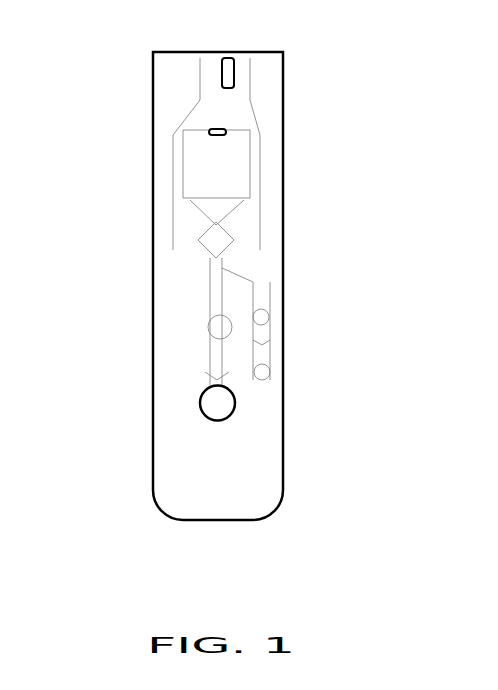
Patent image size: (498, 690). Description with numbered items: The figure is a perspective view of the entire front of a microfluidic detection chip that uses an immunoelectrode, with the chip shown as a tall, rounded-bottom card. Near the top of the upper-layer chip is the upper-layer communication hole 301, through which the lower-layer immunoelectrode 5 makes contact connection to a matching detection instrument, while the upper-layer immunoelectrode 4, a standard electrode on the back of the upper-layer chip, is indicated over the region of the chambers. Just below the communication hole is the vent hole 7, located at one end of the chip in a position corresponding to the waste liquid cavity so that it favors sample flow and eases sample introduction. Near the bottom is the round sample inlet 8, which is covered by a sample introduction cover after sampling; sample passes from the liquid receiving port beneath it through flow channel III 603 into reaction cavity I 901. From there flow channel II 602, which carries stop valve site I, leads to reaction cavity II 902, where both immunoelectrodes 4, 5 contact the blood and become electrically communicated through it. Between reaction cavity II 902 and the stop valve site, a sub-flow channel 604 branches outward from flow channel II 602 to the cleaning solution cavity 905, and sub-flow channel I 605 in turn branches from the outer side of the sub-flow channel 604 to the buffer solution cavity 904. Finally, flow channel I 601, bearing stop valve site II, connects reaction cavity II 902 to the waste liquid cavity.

The upper-layer immunoelectrode 4 is at (198, 102).
The upper-layer communication hole 301 is at (232, 72).
The vent hole 7 is at (226, 131).
The lower-layer immunoelectrode 5 is at (262, 162).
The flow channel I 601 is at (216, 215).
The reaction cavity II 902 is at (215, 265).
The flow channel II 602 is at (218, 302).
The sub-flow channel 604 is at (235, 293).
The cleaning solution cavity 905 is at (259, 318).
The reaction cavity I 901 is at (212, 327).
The sub-flow channel I 605 is at (253, 343).
The flow channel III 603 is at (218, 376).
The buffer solution cavity 904 is at (265, 368).
The sample inlet 8 is at (236, 406).